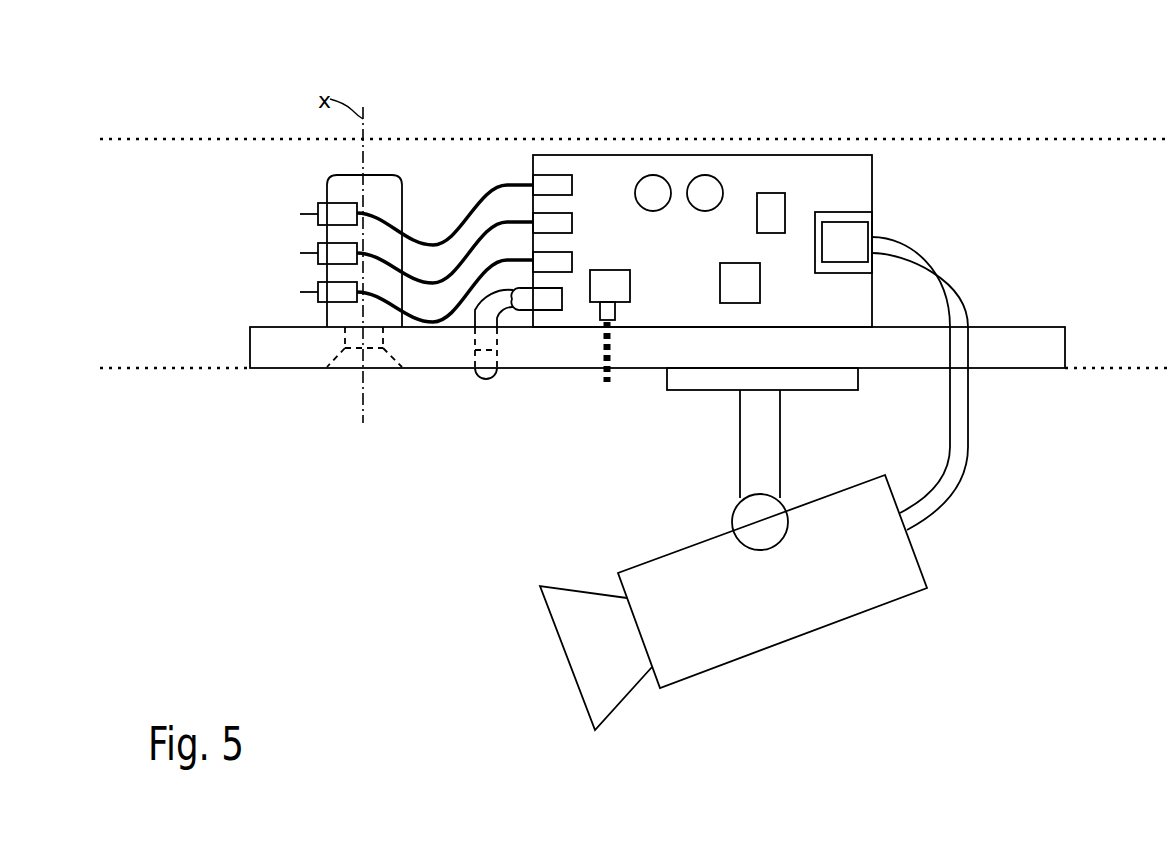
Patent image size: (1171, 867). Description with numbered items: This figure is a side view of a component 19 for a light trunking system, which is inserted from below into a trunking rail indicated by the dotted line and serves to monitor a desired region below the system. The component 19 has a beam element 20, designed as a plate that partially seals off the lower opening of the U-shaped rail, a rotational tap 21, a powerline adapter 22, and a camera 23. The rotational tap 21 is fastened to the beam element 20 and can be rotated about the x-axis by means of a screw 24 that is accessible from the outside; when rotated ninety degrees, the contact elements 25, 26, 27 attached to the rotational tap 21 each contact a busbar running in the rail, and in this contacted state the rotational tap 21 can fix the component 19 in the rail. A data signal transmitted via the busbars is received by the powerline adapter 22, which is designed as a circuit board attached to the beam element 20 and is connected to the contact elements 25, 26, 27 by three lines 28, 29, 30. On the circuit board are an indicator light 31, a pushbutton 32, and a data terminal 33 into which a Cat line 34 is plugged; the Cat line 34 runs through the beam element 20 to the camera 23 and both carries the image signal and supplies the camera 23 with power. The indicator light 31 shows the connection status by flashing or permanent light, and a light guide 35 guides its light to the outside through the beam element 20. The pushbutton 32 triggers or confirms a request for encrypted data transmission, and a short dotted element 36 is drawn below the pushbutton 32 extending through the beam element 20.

The component 19 is at (326, 530).
The beam element 20 is at (1052, 345).
The rotational tap 21 is at (383, 173).
The powerline adapter 22 is at (860, 178).
The camera 23 is at (921, 571).
The screw 24 is at (378, 361).
The contact element 25 is at (301, 214).
The contact element 26 is at (301, 253).
The contact element 27 is at (301, 292).
The line 28 is at (417, 238).
The line 29 is at (432, 281).
The line 30 is at (440, 321).
The indicator light 31 is at (550, 300).
The pushbutton 32 is at (632, 293).
The data terminal 33 is at (868, 229).
The Cat line 34 is at (958, 432).
The light guide 35 is at (493, 312).
The signal line 36 is at (610, 387).